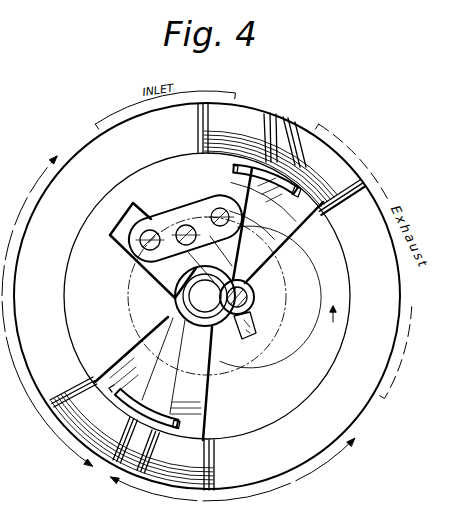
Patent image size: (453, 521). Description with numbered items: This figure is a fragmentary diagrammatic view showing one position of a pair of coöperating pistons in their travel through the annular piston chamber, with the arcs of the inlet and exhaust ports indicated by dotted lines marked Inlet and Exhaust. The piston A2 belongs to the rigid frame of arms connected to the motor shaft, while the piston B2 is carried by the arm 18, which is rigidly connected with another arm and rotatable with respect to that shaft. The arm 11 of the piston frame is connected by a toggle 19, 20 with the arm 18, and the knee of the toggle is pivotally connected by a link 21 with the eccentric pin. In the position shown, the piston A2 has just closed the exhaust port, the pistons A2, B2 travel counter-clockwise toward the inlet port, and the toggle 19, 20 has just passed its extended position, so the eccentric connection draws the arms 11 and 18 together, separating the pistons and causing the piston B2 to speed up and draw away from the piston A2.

The arm 11 is at (132, 214).
The arm 18 is at (212, 192).
The toggle member 19 is at (150, 252).
The toggle member 20 is at (272, 260).
The link 21 is at (176, 300).
The piston B2 is at (212, 129).
The piston A2 is at (323, 166).